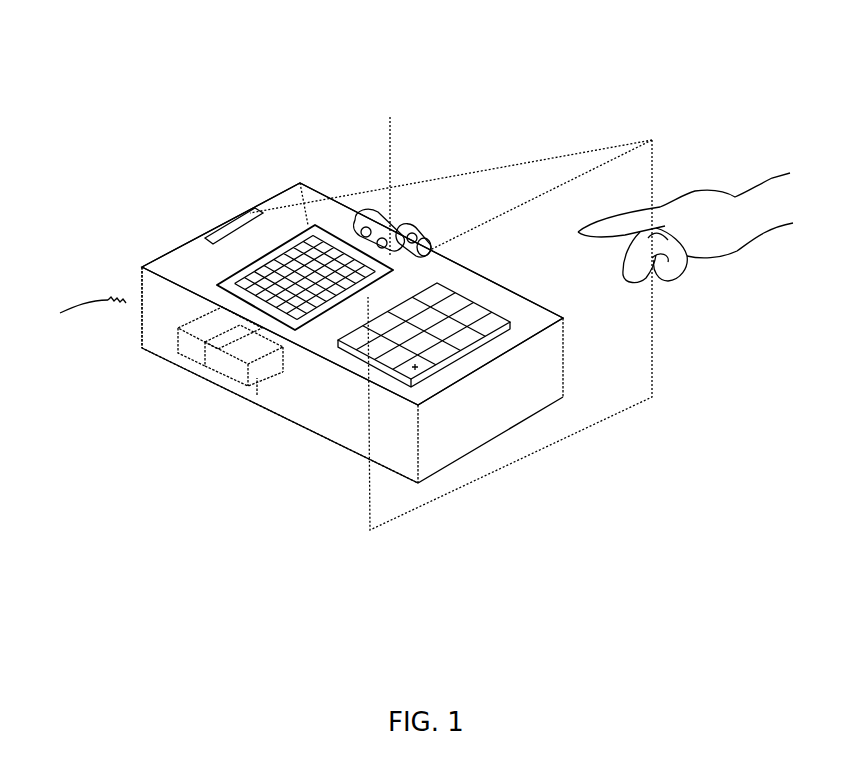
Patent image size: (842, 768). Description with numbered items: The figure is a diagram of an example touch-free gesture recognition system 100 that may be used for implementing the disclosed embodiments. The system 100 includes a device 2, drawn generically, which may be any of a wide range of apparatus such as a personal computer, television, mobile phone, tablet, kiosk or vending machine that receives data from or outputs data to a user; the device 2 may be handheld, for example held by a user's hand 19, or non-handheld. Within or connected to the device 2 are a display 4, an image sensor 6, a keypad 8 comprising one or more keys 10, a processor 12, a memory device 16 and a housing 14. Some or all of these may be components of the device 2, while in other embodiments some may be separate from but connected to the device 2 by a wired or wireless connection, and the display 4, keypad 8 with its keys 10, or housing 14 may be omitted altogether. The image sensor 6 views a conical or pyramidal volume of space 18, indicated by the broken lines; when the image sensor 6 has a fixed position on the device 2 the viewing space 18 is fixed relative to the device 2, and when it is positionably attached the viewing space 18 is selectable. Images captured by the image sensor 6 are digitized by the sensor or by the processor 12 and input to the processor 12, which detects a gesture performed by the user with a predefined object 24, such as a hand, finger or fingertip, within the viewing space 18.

The touch-free gesture recognition system 100 is at (72, 313).
The device 2 is at (510, 383).
The display 4 is at (300, 183).
The image sensor 6 is at (273, 243).
The keypad 8 is at (368, 372).
The key 10 is at (427, 377).
The processor 12 is at (178, 352).
The housing 14 is at (142, 348).
The memory device 16 is at (252, 366).
The viewing space 18 is at (568, 148).
The user's hand 19 is at (390, 117).
The predefined object 24 is at (667, 210).